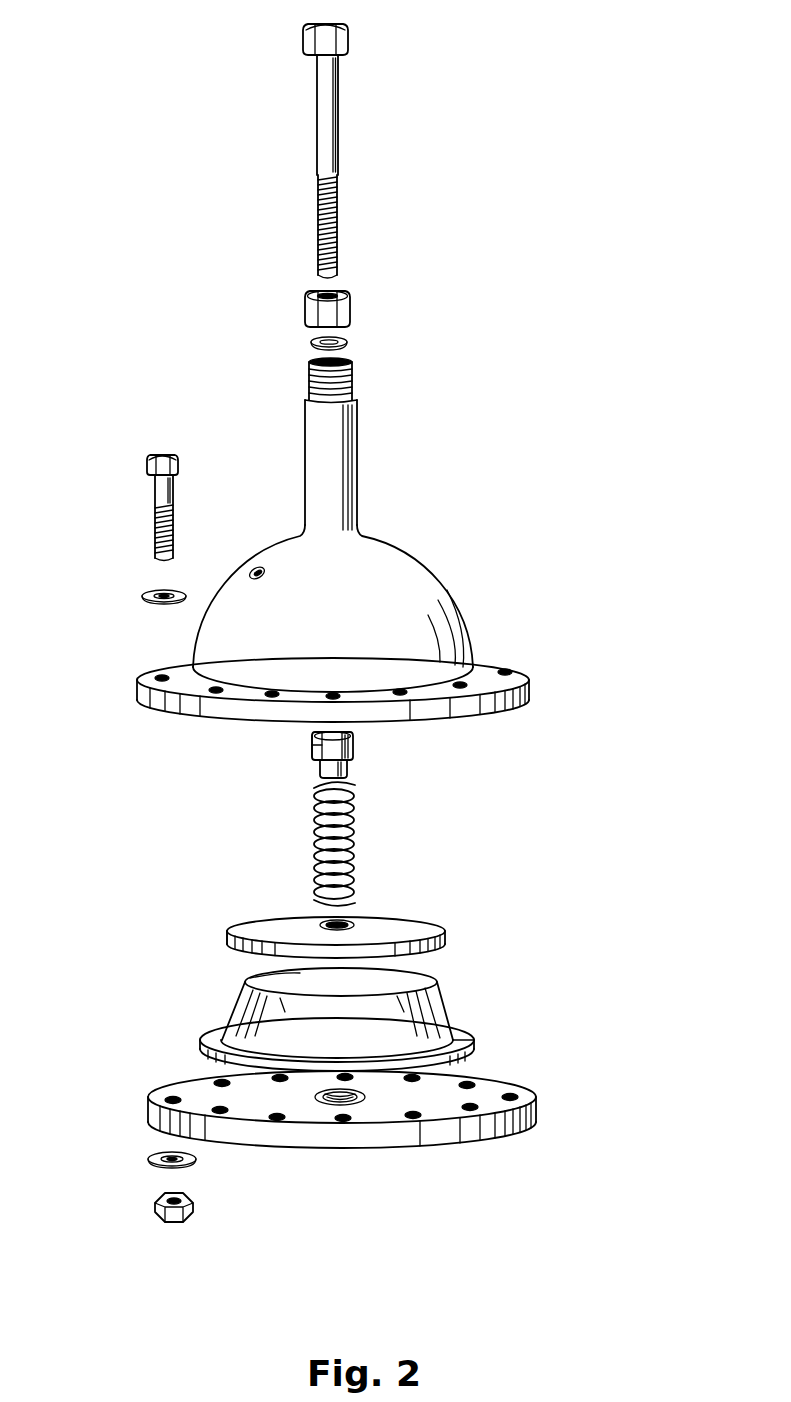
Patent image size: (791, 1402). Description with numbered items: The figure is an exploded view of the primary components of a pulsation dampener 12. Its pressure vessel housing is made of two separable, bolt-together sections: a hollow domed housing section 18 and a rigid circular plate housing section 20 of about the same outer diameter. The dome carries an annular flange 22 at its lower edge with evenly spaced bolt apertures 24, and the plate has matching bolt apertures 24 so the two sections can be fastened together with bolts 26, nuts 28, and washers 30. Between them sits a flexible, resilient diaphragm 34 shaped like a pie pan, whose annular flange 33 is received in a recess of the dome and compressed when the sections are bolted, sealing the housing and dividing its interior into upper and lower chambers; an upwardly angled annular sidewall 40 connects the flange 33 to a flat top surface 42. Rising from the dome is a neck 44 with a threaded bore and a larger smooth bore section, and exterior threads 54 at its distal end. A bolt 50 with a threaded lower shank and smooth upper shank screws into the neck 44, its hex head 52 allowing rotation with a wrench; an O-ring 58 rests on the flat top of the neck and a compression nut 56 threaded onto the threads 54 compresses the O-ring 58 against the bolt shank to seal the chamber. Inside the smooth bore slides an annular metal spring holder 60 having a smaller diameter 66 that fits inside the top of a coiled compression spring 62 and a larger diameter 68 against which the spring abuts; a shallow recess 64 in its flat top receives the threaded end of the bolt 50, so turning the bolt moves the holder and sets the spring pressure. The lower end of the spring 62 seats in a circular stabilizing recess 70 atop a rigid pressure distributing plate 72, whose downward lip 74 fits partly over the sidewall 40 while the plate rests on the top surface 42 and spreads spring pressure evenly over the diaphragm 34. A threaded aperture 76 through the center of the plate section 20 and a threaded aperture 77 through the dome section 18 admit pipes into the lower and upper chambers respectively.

The pulsation dampener 12 is at (197, 252).
The housing section 18 is at (440, 565).
The housing section 20 is at (537, 1110).
The annular flange 22 is at (530, 694).
The bolt apertures 24 is at (462, 683).
The bolts 26 is at (150, 487).
The nuts 28 is at (155, 1207).
The washers 30 is at (150, 596).
The annular flange 33 is at (475, 1032).
The diaphragm 34 is at (440, 995).
The annular sidewall 40 is at (237, 1003).
The flat top surface 42 is at (270, 980).
The neck 44 is at (357, 460).
The bolt 50 is at (338, 135).
The hex head 52 is at (348, 38).
The exterior threads 54 is at (352, 375).
The compression nut 56 is at (350, 305).
The O-ring 58 is at (311, 344).
The spring holder 60 is at (353, 740).
The compression spring 62 is at (356, 840).
The recess 64 is at (311, 735).
The smaller diameter 66 is at (348, 765).
The larger diameter 68 is at (311, 755).
The stabilizing recess 70 is at (348, 925).
The pressure distributing plate 72 is at (445, 930).
The lip 74 is at (227, 937).
The aperture 76 is at (340, 1105).
The aperture 77 is at (257, 562).